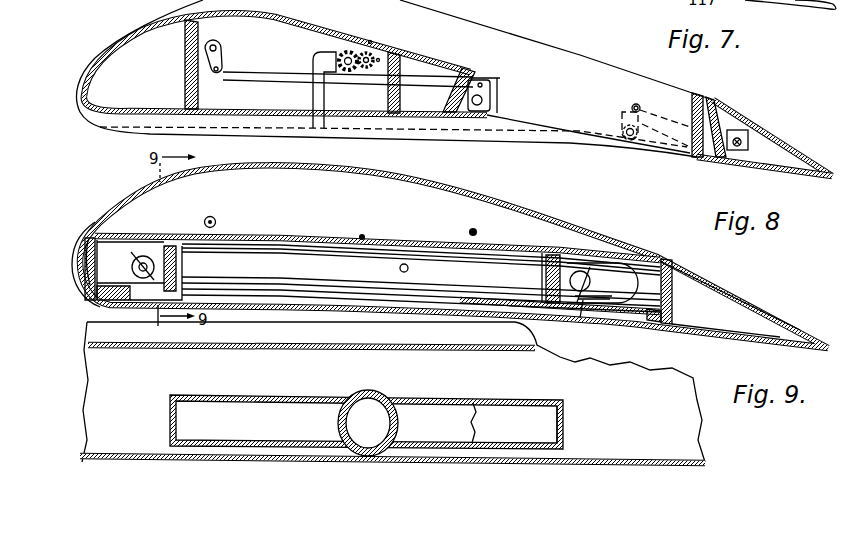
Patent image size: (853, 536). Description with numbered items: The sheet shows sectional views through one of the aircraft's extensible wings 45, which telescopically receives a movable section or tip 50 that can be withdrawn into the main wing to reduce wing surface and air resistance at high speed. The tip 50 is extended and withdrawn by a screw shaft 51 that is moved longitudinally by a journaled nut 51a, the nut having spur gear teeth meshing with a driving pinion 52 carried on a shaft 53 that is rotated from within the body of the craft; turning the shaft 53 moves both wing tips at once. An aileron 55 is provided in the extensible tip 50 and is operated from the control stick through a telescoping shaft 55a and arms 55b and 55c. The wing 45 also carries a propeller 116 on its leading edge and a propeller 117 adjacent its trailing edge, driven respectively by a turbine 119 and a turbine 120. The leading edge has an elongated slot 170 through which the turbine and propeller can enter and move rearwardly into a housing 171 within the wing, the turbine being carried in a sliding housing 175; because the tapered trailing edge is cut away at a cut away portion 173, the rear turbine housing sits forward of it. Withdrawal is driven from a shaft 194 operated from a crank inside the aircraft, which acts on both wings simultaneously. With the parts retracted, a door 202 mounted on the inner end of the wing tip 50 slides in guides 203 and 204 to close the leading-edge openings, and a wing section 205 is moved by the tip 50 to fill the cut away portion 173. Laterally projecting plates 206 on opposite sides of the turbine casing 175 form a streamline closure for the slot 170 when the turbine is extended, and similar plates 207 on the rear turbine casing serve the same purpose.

In FIG. 7, the wing 45 is at (561, 40).
In FIG. 8, the wing 45 is at (487, 184).
In FIG. 9, the wing 45 is at (85, 370).
In FIG. 7, the movable section or tip 50 is at (443, 60).
In FIG. 7, the screw shaft 51 is at (366, 52).
In FIG. 7, the journaled nut 51a is at (347, 52).
In FIG. 7, the driving pinion 52 is at (371, 40).
In FIG. 7, the shaft 53 is at (380, 58).
In FIG. 8, the shaft 53 is at (364, 234).
In FIG. 7, the aileron 55 is at (543, 100).
In FIG. 7, the telescoping shaft 55a is at (216, 44).
In FIG. 8, the telescoping shaft 55a is at (216, 220).
In FIG. 7, the arm 55b is at (224, 56).
In FIG. 7, the arm 55c is at (497, 97).
In FIG. 8, the propeller 116 is at (152, 250).
In FIG. 8, the propeller 117 is at (582, 305).
In FIG. 8, the turbine 119 is at (122, 255).
In FIG. 8, the turbine 120 is at (612, 263).
In FIG. 8, the elongated slot 170 is at (78, 254).
In FIG. 9, the elongated slot 170 is at (522, 412).
In FIG. 8, the housing 171 is at (162, 250).
In FIG. 9, the housing 171 is at (565, 426).
In FIG. 8, the cut away portion 173 is at (773, 306).
In FIG. 9, the housing 175 is at (340, 421).
In FIG. 8, the shaft 194 is at (406, 264).
In FIG. 8, the door 202 is at (78, 276).
In FIG. 8, the guide 203 is at (88, 240).
In FIG. 8, the guide 204 is at (112, 297).
In FIG. 8, the wing section 205 is at (737, 294).
In FIG. 8, the laterally projecting plate 206 is at (172, 268).
In FIG. 9, the laterally projecting plate 206 is at (262, 402).
In FIG. 8, the plate 207 is at (546, 276).